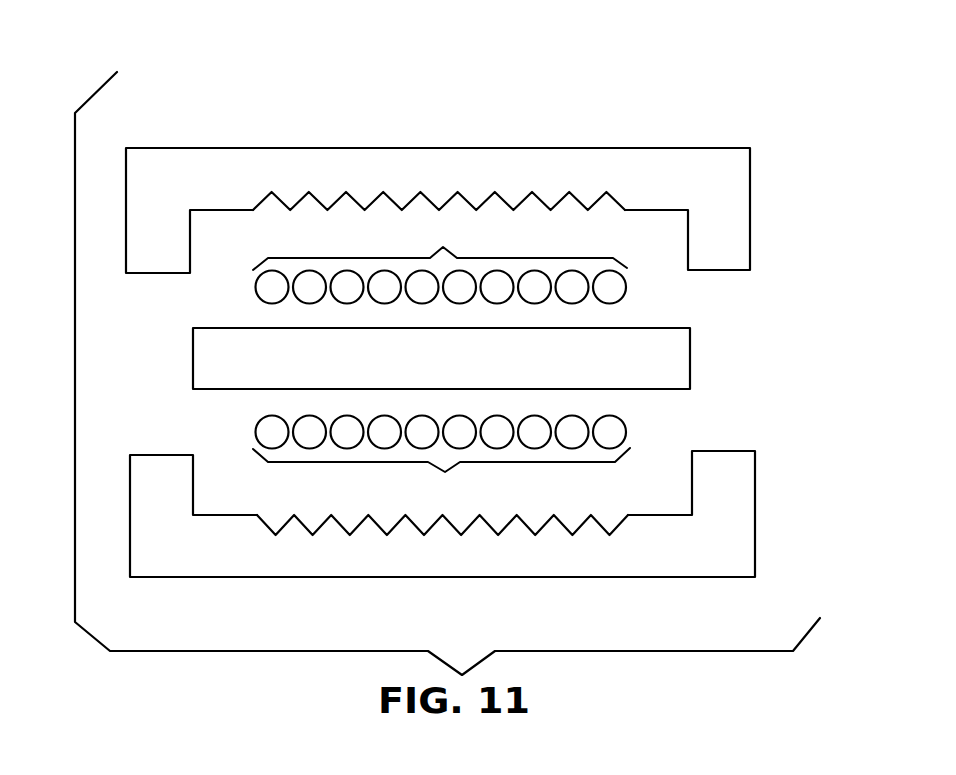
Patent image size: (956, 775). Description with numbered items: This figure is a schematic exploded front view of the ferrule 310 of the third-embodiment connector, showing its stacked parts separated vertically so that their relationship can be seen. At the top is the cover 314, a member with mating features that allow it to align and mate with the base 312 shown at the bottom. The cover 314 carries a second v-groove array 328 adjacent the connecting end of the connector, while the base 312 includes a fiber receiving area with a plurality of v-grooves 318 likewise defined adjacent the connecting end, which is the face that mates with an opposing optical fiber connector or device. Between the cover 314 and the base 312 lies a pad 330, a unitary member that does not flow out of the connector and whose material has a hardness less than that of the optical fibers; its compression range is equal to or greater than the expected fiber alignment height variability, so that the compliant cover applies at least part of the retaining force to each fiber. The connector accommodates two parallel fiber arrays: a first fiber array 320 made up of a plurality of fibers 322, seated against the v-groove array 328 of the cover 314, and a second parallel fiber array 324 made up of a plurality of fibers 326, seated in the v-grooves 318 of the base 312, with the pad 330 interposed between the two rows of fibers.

The ferrule 310 is at (617, 117).
The ferrule block or base 312 is at (317, 563).
The cover 314 is at (372, 162).
The v-grooves 318 is at (553, 527).
The first fiber array 320 is at (440, 244).
The fibers 322 is at (310, 292).
The second parallel fiber array 324 is at (441, 477).
The fibers 326 is at (310, 431).
The second v-groove array 328 is at (513, 209).
The pad 330 is at (203, 362).